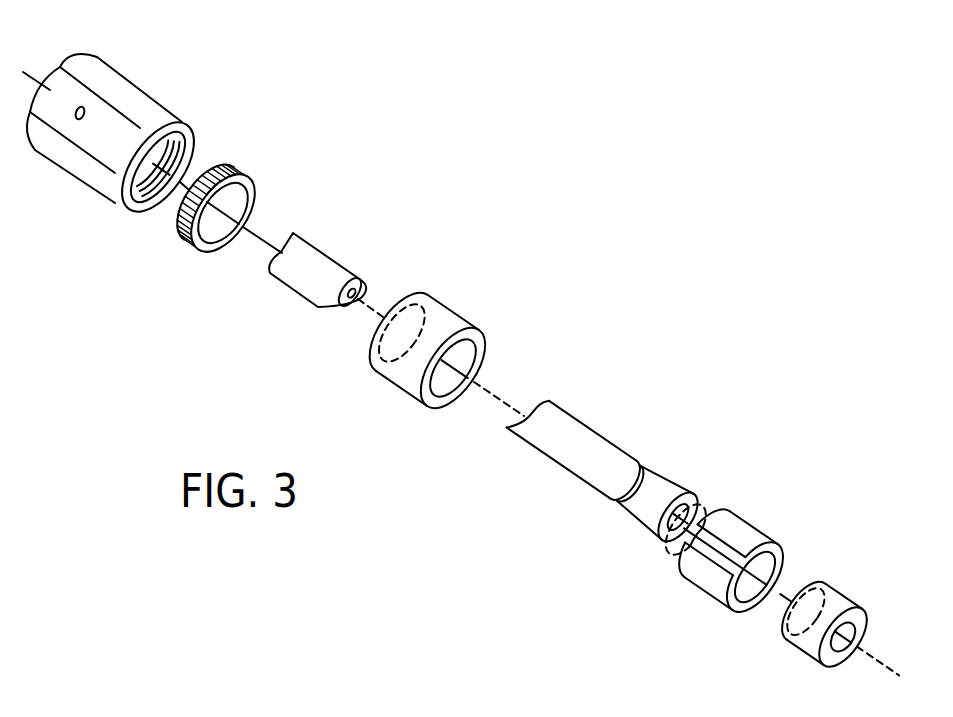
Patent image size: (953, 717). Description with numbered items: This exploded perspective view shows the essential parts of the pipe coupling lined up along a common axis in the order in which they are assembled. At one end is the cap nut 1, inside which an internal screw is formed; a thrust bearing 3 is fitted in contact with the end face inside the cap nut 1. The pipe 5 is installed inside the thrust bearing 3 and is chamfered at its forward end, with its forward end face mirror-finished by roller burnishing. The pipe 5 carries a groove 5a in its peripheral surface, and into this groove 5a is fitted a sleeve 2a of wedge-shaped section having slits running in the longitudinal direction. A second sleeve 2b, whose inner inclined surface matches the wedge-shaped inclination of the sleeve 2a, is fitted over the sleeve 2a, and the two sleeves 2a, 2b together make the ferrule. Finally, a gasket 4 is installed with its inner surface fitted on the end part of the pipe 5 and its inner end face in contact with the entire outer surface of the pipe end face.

The cap nut 1 is at (143, 93).
The thrust bearing 3 is at (205, 250).
The pipe 5 is at (325, 260).
The sleeve 2b is at (433, 308).
The groove 5a is at (647, 473).
The sleeve 2a is at (707, 582).
The gasket 4 is at (817, 587).